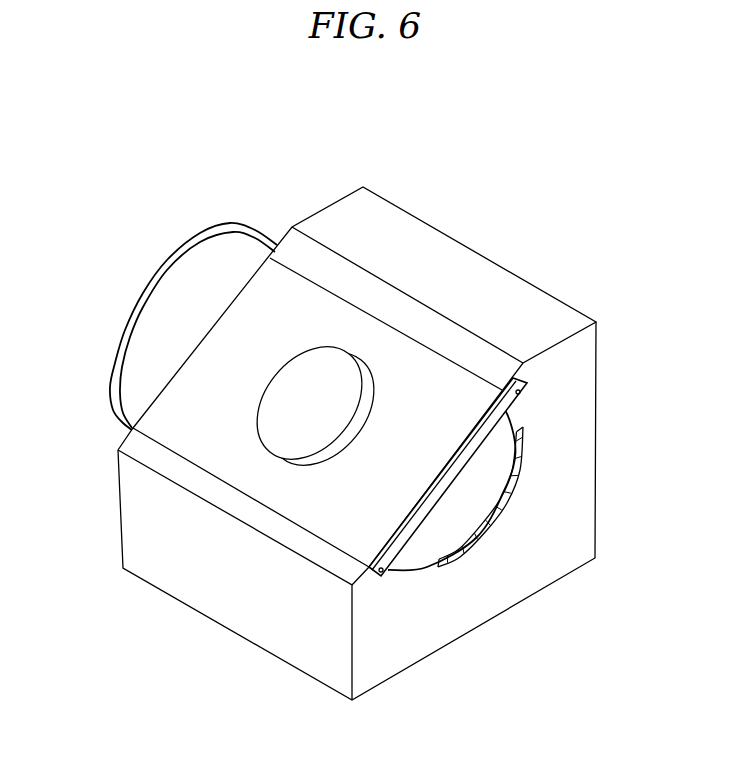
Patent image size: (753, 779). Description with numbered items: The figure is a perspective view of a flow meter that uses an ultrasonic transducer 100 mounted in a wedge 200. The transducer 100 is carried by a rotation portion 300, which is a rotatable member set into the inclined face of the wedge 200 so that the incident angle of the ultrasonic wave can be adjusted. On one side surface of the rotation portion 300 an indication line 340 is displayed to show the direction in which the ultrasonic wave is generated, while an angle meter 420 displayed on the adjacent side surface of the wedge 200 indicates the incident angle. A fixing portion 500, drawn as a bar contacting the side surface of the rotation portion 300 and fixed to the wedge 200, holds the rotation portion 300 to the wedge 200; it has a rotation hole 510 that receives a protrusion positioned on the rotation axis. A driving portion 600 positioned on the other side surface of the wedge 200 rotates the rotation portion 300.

The ultrasonic transducer 100 is at (354, 342).
The wedge 200 is at (191, 623).
The rotation portion 300 is at (190, 436).
The indication line 340 is at (452, 484).
The angle meter 420 is at (476, 540).
The fixing portion 500 is at (541, 397).
The rotation hole 510 is at (462, 474).
The driving portion 600 is at (154, 251).